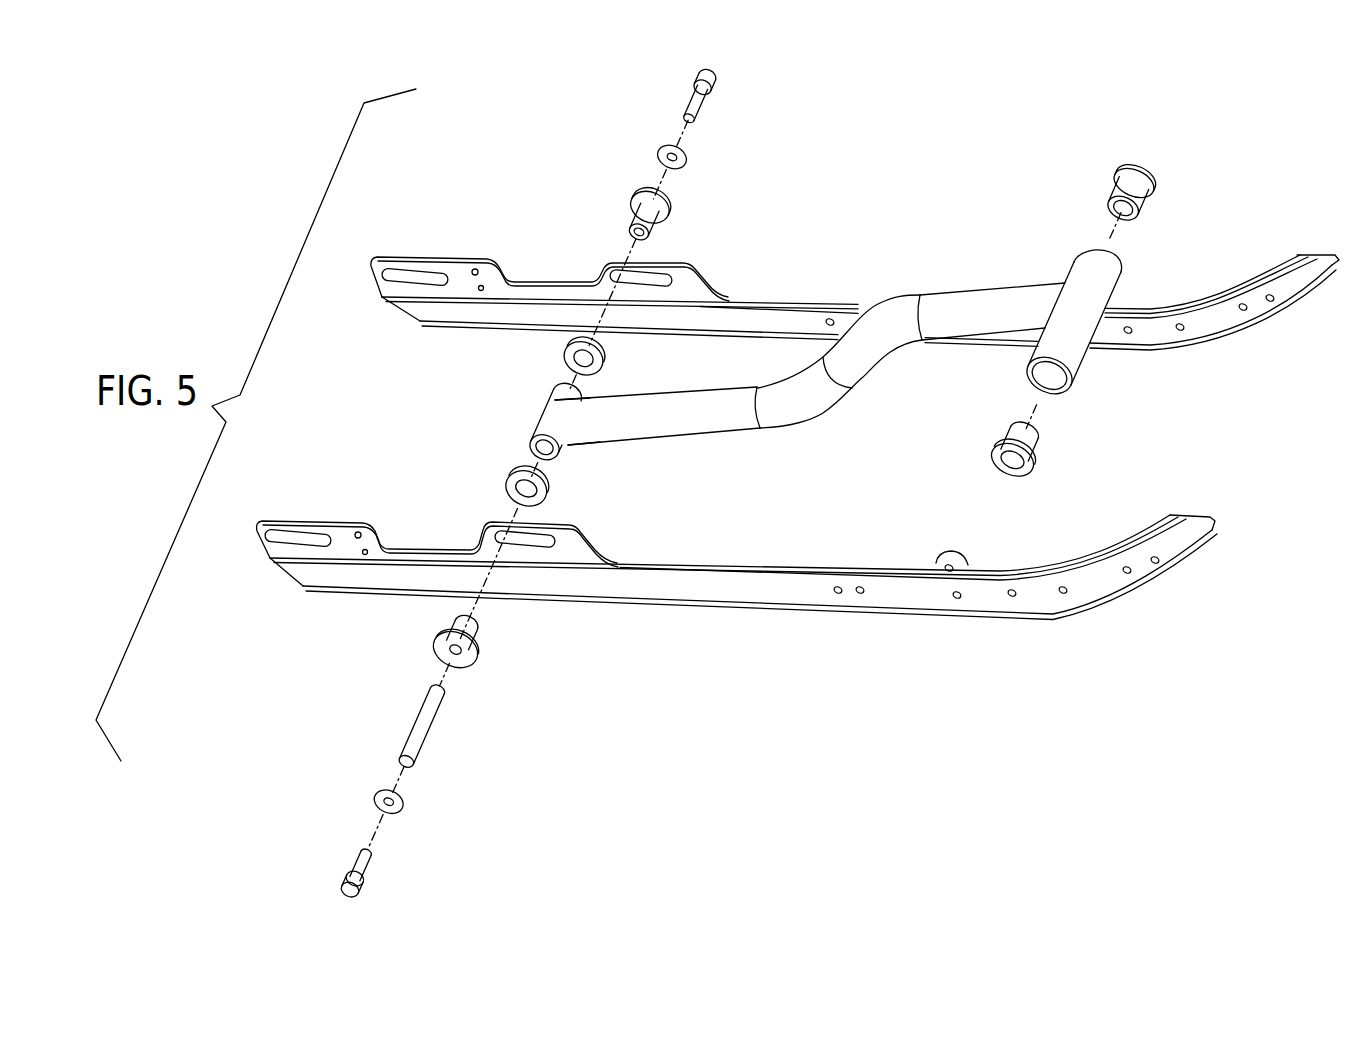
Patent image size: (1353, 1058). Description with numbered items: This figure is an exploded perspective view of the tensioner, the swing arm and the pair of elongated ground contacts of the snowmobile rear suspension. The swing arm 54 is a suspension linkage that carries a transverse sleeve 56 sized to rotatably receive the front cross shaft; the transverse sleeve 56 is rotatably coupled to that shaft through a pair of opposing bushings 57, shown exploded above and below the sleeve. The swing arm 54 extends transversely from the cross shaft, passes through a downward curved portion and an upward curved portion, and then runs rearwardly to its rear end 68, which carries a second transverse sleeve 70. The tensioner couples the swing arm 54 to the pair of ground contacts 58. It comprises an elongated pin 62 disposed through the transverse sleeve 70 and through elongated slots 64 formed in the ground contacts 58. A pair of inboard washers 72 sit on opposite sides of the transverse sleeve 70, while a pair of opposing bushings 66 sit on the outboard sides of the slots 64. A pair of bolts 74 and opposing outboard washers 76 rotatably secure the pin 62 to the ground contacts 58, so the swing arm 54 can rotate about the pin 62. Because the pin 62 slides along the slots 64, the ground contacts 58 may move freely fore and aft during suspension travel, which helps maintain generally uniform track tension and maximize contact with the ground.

The swing arm 54 is at (692, 410).
The transverse sleeve 56 is at (1068, 350).
The bushings 57 is at (1136, 182).
The ground contacts 58 is at (780, 300).
The elongated pin 62 is at (420, 732).
The elongated slots 64 is at (623, 273).
The bushings 66 is at (652, 212).
The rear end 68 is at (560, 413).
The transverse sleeve 70 is at (546, 403).
The inboard washers 72 is at (601, 360).
The bolts 74 is at (702, 104).
The outboard washers 76 is at (663, 150).